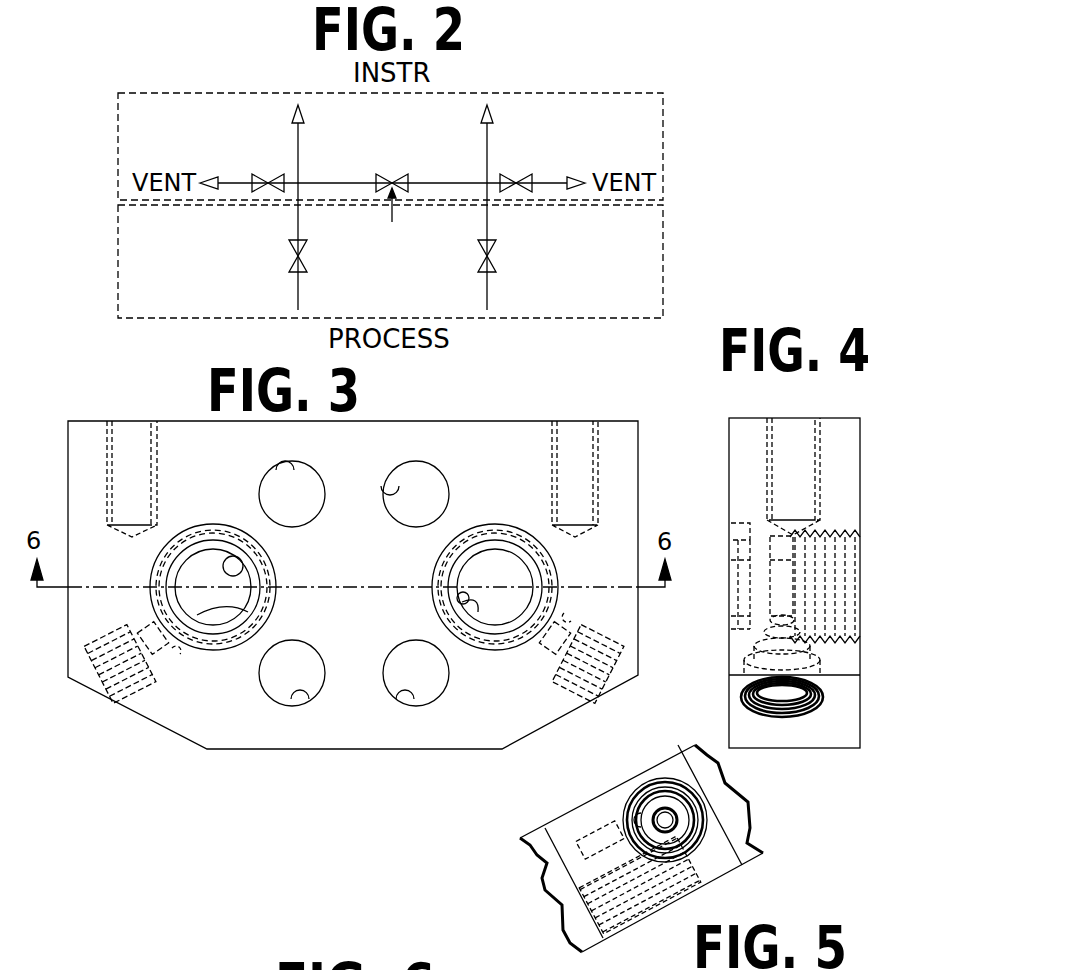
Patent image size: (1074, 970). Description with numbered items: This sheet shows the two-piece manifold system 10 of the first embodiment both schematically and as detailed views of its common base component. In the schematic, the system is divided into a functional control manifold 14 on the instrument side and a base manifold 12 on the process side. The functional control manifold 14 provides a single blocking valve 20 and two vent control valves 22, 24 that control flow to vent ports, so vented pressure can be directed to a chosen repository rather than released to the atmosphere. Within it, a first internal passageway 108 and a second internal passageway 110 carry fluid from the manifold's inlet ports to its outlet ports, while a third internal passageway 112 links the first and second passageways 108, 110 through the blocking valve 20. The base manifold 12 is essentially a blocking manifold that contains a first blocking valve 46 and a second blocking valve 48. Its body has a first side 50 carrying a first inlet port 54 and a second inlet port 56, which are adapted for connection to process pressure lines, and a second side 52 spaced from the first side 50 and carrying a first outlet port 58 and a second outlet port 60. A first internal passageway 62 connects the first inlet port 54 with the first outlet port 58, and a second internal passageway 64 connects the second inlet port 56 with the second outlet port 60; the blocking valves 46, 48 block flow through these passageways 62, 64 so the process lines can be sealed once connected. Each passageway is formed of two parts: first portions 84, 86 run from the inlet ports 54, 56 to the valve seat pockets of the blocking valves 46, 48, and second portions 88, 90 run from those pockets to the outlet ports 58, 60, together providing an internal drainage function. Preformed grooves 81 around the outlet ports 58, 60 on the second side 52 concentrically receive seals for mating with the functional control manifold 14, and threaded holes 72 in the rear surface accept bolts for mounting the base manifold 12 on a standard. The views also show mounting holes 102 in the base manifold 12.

In FIG. 2, the two-piece manifold system 10 is at (548, 64).
In FIG. 2, the base manifold 12 is at (663, 262).
In FIG. 3, the base manifold 12 is at (447, 436).
In FIG. 4, the base manifold 12 is at (832, 507).
In FIG. 5, the base manifold 12 is at (742, 852).
In FIG. 2, the functional control manifold 14 is at (663, 134).
In FIG. 2, the blocking valve 20 is at (393, 183).
In FIG. 2, the vent control valve 22 is at (262, 174).
In FIG. 2, the vent control valve 24 is at (530, 174).
In FIG. 2, the first blocking valve 46 is at (296, 267).
In FIG. 2, the second blocking valve 48 is at (490, 267).
In FIG. 4, the first side 50 is at (860, 657).
In FIG. 5, the first side 50 is at (728, 873).
In FIG. 3, the second side 52 is at (366, 578).
In FIG. 4, the second side 52 is at (753, 633).
In FIG. 5, the second side 52 is at (542, 845).
In FIG. 3, the first inlet port 54 is at (215, 532).
In FIG. 3, the second inlet port 56 is at (509, 535).
In FIG. 4, the second inlet port 56 is at (837, 536).
In FIG. 5, the second inlet port 56 is at (665, 820).
In FIG. 3, the first outlet port 58 is at (240, 575).
In FIG. 3, the second outlet port 60 is at (461, 602).
In FIG. 4, the second outlet port 60 is at (739, 555).
In FIG. 3, the first internal passageway 62 is at (193, 682).
In FIG. 3, the second internal passageway 64 is at (519, 666).
In FIG. 3, the threaded hole 72 is at (112, 446).
In FIG. 4, the threaded hole 72 is at (799, 421).
In FIG. 3, the preformed groove 81 is at (433, 601).
In FIG. 3, the first portion of first internal passageway 84 is at (150, 603).
In FIG. 3, the first portion of second internal passageway 86 is at (533, 659).
In FIG. 4, the first portion of second internal passageway 86 is at (751, 640).
In FIG. 5, the first portion of second internal passageway 86 is at (617, 828).
In FIG. 3, the second portion of first internal passageway 88 is at (180, 654).
In FIG. 3, the second portion of second internal passageway 90 is at (567, 613).
In FIG. 4, the second portion of second internal passageway 90 is at (779, 595).
In FIG. 5, the second portion of second internal passageway 90 is at (660, 827).
In FIG. 3, the mounting hole 102 is at (397, 478).
In FIG. 2, the first internal passageway 108 is at (299, 155).
In FIG. 2, the second internal passageway 110 is at (488, 135).
In FIG. 2, the third internal passageway 112 is at (394, 227).